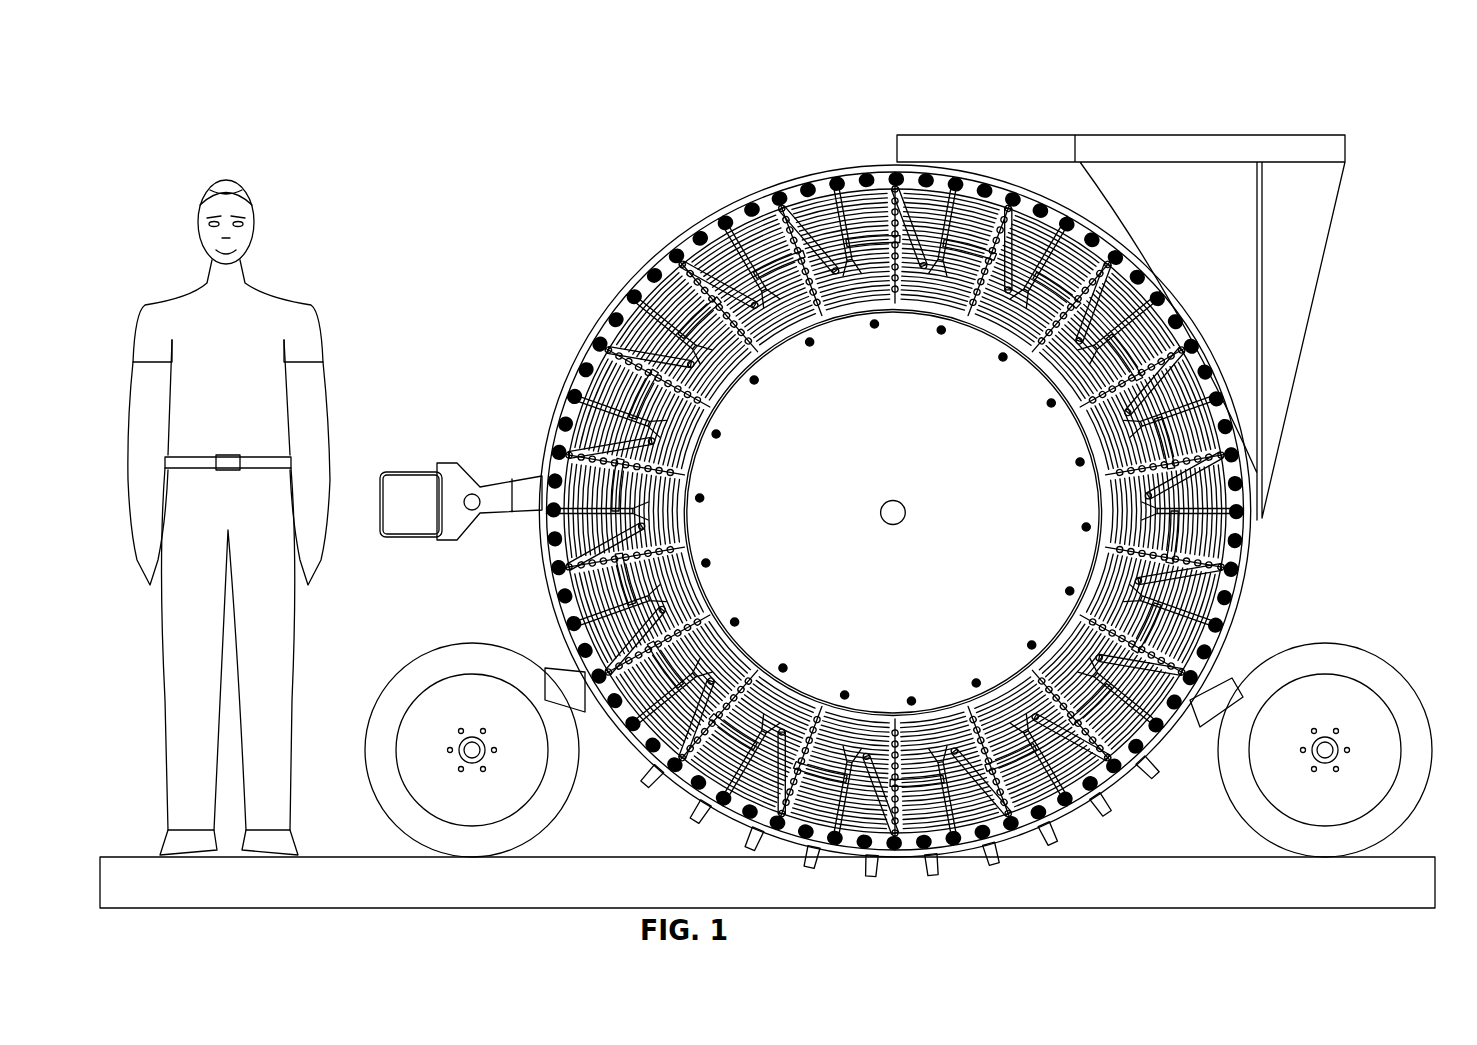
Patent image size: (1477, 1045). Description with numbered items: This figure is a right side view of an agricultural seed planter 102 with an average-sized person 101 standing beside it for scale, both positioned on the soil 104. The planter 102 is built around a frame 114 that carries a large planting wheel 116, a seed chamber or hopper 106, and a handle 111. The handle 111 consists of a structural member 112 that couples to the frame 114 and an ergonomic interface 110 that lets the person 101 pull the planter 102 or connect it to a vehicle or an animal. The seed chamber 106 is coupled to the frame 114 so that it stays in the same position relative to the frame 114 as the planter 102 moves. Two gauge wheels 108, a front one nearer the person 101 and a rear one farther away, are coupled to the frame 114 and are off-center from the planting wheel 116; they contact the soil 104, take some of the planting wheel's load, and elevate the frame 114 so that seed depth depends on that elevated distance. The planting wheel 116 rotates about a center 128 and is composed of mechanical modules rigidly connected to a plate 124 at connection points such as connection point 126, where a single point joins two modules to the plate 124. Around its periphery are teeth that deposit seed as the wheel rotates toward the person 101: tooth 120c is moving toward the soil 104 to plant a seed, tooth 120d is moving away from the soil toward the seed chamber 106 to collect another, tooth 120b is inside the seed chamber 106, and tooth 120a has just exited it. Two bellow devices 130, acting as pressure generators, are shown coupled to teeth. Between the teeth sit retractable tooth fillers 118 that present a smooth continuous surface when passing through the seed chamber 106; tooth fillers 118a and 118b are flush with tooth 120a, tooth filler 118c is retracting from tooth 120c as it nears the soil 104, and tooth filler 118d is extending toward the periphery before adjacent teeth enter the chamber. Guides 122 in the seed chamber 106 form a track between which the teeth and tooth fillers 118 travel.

The person 101 is at (226, 136).
The agricultural seed planter 102 is at (1183, 327).
The soil 104 is at (1290, 903).
The seed chamber 106 is at (1285, 372).
The gauge wheels 108 is at (412, 683).
The ergonomic interface 110 is at (412, 470).
The handle 111 is at (461, 440).
The structural member 112 is at (497, 478).
The frame 114 is at (545, 650).
The planting wheel 116 is at (949, 465).
The retractable tooth filler 118 is at (652, 258).
The tooth filler 118a is at (748, 183).
The tooth filler 118b is at (850, 158).
The tooth filler 118c is at (655, 752).
The tooth filler 118d is at (1232, 620).
The tooth 120a is at (795, 178).
The tooth 120b is at (932, 163).
The tooth 120c is at (685, 805).
The tooth 120d is at (1150, 765).
The guides 122 is at (1018, 163).
The plate 124 is at (1055, 495).
The connection point 126 is at (706, 499).
The center 128 is at (890, 523).
The bellow devices 130 is at (982, 335).